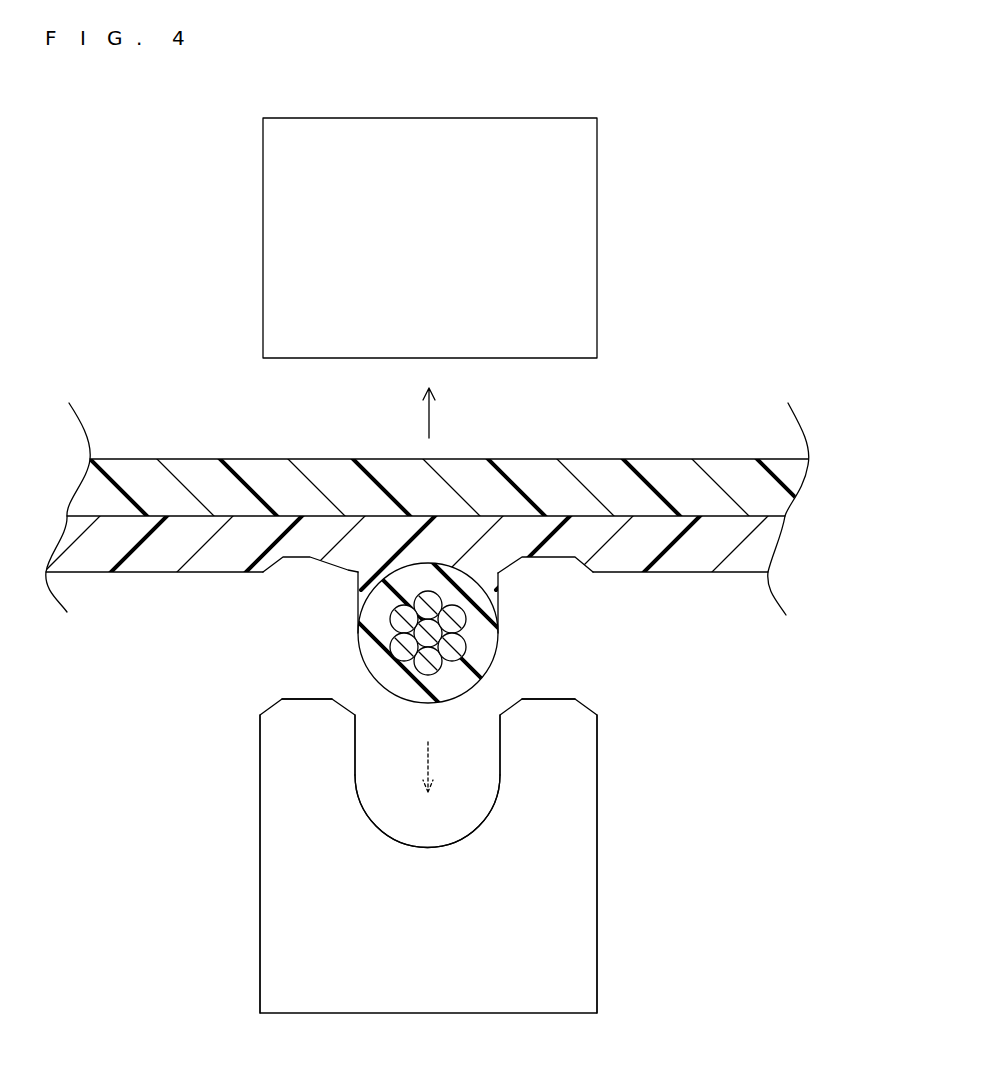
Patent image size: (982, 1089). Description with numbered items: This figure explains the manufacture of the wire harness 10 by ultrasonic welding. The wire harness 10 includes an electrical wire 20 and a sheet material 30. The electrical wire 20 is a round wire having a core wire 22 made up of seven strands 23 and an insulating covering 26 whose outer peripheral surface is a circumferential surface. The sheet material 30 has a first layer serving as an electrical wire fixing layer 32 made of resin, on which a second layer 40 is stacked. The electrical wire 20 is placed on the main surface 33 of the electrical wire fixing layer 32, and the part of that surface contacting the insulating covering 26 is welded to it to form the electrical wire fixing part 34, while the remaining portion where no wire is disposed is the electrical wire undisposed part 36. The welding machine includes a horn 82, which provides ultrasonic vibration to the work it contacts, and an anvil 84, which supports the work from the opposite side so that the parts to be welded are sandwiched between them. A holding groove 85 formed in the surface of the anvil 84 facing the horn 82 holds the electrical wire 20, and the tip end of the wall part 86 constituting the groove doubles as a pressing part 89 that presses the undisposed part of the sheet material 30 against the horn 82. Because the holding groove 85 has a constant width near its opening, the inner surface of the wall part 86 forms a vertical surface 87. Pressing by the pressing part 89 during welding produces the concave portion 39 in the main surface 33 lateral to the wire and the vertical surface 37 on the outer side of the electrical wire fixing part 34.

The wire harness 10 is at (147, 640).
The electrical wire 20 is at (435, 671).
The core wire 22 is at (473, 677).
The strand 23 is at (432, 668).
The insulating covering 26 is at (409, 693).
The sheet material 30 is at (453, 700).
The electrical wire fixing layer 32 is at (453, 510).
The main surface 33 is at (677, 572).
The electrical wire fixing part 34 is at (437, 545).
The electrical wire undisposed part 36 is at (233, 535).
The vertical surface 37 is at (357, 597).
The concave portion 39 is at (313, 558).
The second layer 40 is at (775, 496).
The horn 82 is at (583, 259).
The anvil 84 is at (427, 832).
The holding groove 85 is at (463, 837).
The wall part 86 is at (277, 762).
The vertical surface 87 is at (502, 752).
The pressing part 89 is at (296, 699).